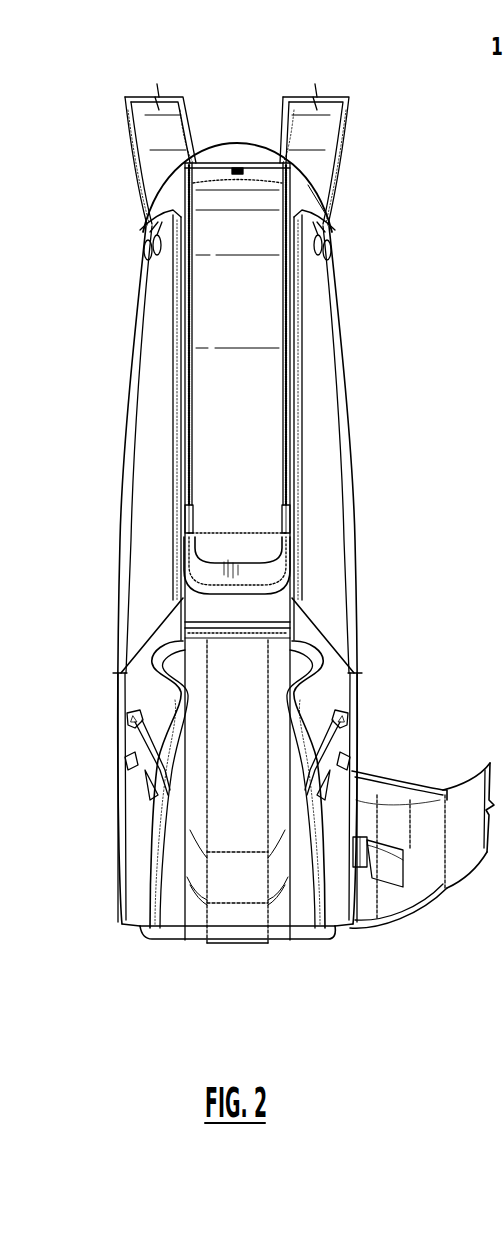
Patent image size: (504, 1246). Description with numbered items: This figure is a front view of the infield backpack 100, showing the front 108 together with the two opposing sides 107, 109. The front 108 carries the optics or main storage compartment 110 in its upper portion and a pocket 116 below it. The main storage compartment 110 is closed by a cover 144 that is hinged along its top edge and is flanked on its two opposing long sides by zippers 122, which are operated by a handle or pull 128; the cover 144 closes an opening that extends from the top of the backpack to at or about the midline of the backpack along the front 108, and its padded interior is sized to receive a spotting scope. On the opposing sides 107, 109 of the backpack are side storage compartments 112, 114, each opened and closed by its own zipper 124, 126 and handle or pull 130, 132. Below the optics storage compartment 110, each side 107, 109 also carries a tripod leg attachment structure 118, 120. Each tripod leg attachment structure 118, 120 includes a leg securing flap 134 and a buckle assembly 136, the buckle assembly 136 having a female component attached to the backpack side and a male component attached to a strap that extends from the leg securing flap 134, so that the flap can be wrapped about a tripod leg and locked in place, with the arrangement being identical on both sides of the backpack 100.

The infield backpack 100 is at (224, 126).
The backpack side 107 is at (369, 427).
The front 108 is at (246, 988).
The backpack side 109 is at (110, 750).
The optics or main storage compartment 110 is at (239, 497).
The side storage compartment 112 is at (371, 567).
The side storage compartment 114 is at (120, 567).
The pocket 116 is at (237, 782).
The tripod leg attachment structure 118 is at (412, 885).
The tripod leg attachment structure 120 is at (108, 887).
The zipper 122 is at (234, 348).
The zipper 124 is at (345, 348).
The zipper 126 is at (131, 427).
The handle or pull 128 is at (296, 577).
The handle or pull 130 is at (376, 249).
The handle or pull 132 is at (114, 245).
The leg securing flap 134 is at (246, 784).
The buckle assembly 136 is at (250, 766).
The cover 144 is at (243, 475).